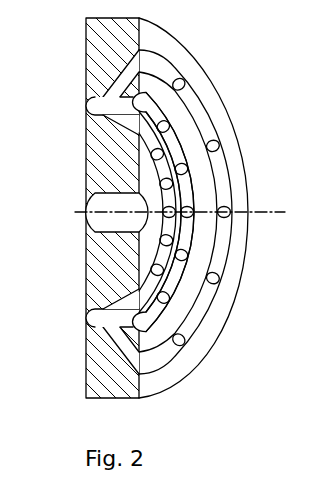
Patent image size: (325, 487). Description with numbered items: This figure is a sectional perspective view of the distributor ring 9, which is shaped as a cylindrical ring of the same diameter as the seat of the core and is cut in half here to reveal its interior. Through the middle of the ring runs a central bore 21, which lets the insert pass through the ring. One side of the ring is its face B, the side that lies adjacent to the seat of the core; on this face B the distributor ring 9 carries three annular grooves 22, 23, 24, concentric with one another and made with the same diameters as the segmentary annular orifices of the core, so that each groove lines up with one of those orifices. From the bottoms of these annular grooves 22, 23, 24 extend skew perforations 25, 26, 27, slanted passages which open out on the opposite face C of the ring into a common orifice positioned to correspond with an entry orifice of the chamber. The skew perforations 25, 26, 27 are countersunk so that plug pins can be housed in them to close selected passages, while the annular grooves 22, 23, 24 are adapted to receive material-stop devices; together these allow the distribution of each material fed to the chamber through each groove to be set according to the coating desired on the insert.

The distributor ring 9 is at (245, 214).
The central bore 21 is at (120, 213).
The annular groove 22 is at (176, 248).
The annular groove 23 is at (180, 283).
The annular groove 24 is at (190, 307).
The skew perforation 25 is at (110, 128).
The skew perforation 26 is at (112, 106).
The skew perforation 27 is at (107, 77).
The face B is at (203, 359).
The face C is at (86, 379).